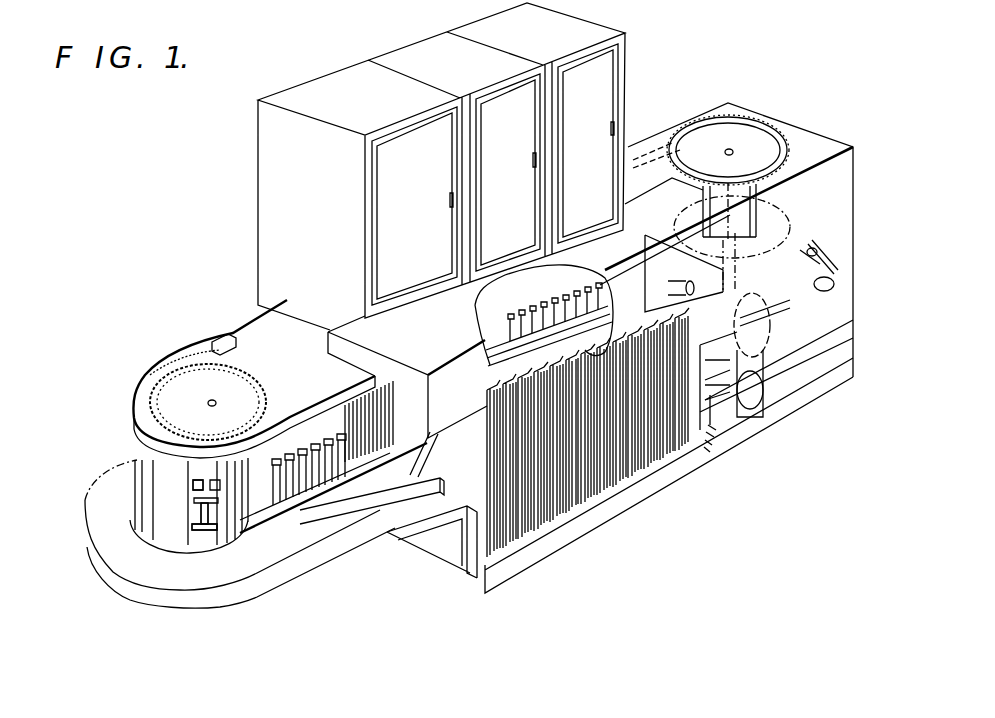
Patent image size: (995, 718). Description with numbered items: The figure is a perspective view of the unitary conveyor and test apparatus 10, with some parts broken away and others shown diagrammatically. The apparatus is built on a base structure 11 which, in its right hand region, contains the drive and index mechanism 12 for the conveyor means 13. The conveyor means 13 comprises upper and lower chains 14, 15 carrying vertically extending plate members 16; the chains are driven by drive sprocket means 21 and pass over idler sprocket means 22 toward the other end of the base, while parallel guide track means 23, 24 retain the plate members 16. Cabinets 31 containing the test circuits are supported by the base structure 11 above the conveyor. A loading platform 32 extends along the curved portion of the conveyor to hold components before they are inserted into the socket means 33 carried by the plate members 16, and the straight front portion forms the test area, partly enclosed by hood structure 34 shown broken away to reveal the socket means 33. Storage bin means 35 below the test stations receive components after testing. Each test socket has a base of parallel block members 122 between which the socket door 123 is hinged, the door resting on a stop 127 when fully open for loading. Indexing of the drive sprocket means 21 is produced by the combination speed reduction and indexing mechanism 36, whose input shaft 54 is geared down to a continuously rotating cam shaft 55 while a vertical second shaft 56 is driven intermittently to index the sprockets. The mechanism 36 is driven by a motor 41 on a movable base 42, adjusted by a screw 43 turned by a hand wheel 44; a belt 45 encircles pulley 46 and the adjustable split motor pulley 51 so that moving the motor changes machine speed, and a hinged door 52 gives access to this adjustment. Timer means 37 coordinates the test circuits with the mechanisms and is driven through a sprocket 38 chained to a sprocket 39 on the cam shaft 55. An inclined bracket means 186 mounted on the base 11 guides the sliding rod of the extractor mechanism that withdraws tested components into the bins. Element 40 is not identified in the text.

The unitary conveyor and test apparatus 10 is at (651, 112).
The base structure 11 is at (460, 485).
The drive and index mechanism 12 is at (797, 228).
The conveyor means 13 is at (148, 350).
The upper chain 14 is at (207, 357).
The lower chain 15 is at (650, 220).
The plate members 16 is at (180, 366).
The drive sprocket means 21 is at (773, 124).
The idler sprocket means 22 is at (175, 393).
The guide track means 23 is at (218, 345).
The guide track means 24 is at (141, 505).
The cabinets 31 is at (381, 50).
The loading platform 32 is at (105, 576).
The socket means 33 is at (207, 540).
The hood structure 34 is at (347, 372).
The storage bin means 35 is at (523, 523).
The combination speed reduction and indexing mechanism 36 is at (808, 222).
The timer means 37 is at (810, 322).
The sprocket 38 is at (818, 275).
The sprocket 39 is at (812, 236).
The link 40 is at (814, 255).
The motor 41 is at (720, 425).
The movable base 42 is at (718, 430).
The screw 43 is at (712, 437).
The hand wheel 44 is at (706, 443).
The belt 45 is at (757, 370).
The pulley 46 is at (757, 305).
The motor pulley 51 is at (757, 392).
The door 52 is at (740, 417).
The input shaft 54 is at (762, 314).
The cam shaft 55 is at (668, 303).
The second shaft 56 is at (728, 195).
The block members 122 is at (218, 522).
The socket door 123 is at (196, 502).
The stop 127 is at (215, 525).
The bracket means 186 is at (403, 484).